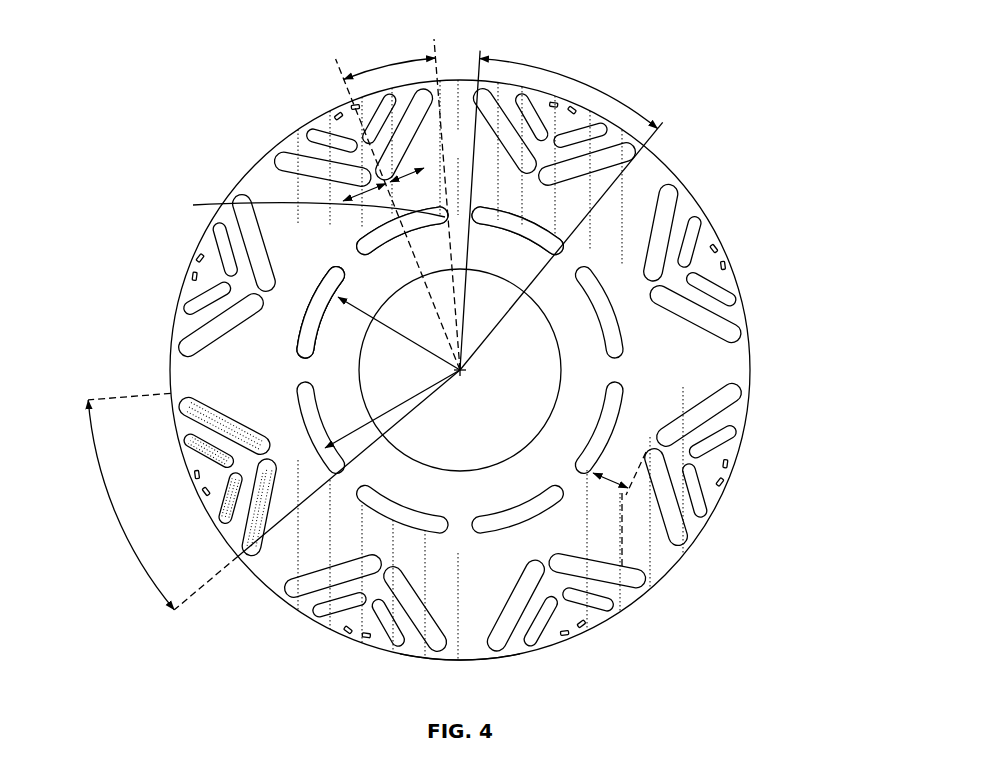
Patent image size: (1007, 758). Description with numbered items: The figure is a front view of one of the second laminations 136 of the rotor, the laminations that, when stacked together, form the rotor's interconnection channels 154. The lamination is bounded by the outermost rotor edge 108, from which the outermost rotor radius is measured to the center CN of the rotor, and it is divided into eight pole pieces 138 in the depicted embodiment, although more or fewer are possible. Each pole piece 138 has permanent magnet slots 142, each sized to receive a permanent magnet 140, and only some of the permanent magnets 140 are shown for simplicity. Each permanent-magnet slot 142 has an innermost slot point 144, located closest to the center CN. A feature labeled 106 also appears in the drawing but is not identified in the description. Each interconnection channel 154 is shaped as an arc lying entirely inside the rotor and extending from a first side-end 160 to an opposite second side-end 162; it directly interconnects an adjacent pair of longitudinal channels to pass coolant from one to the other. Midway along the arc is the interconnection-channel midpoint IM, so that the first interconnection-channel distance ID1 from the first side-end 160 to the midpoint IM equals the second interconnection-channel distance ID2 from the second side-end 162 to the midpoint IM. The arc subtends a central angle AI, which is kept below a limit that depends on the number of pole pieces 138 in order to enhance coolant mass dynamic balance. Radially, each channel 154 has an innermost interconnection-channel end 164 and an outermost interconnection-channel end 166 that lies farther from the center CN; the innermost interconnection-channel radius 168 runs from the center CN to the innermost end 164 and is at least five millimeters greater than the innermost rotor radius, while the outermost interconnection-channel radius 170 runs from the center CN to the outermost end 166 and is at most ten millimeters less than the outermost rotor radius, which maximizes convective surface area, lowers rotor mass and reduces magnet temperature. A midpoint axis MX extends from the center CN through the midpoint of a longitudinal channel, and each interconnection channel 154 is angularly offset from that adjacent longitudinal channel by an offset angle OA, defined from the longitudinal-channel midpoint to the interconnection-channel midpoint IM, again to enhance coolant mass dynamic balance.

The central opening 106 is at (537, 438).
The outermost rotor edge 108 is at (700, 517).
The second laminations 136 is at (261, 179).
The pole pieces 138 is at (121, 525).
The permanent magnets 140 is at (198, 402).
The permanent magnet slots 142 is at (488, 657).
The innermost slot point 144 is at (612, 470).
The interconnection channels 154 is at (735, 399).
The first side-end 160 is at (596, 238).
The second side-end 162 is at (362, 255).
The innermost interconnection-channel end 164 is at (333, 350).
The outermost interconnection-channel end 166 is at (298, 342).
The innermost interconnection-channel radius 168 is at (449, 370).
The outermost interconnection-channel radius 170 is at (385, 423).
The center of the rotor CN is at (466, 373).
The offset angle OA is at (388, 66).
The midpoint axis MX is at (436, 42).
The central angle AI is at (566, 77).
The first interconnection-channel distance ID1 is at (390, 180).
The second interconnection-channel distance ID2 is at (348, 197).
The interconnection-channel midpoint IM is at (306, 205).